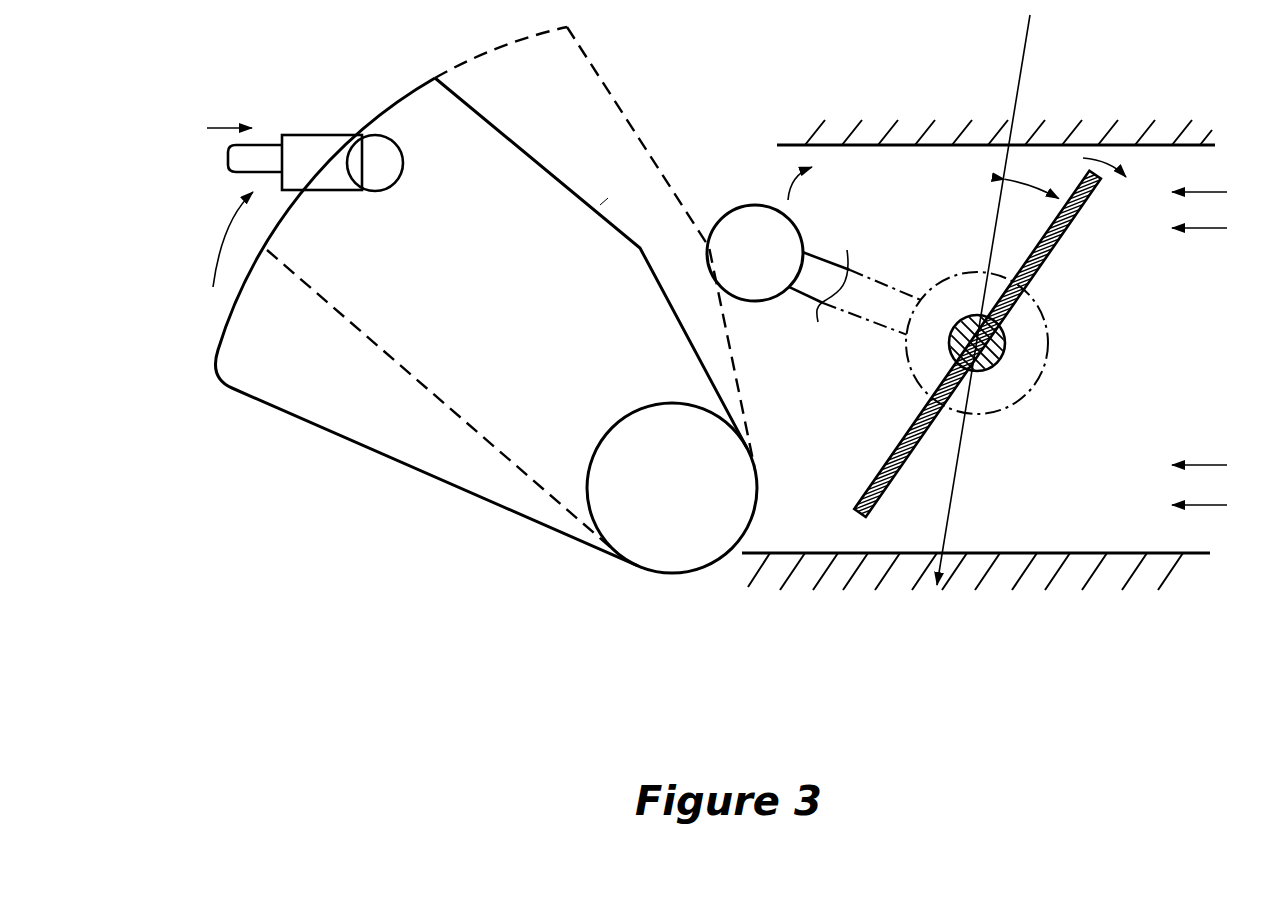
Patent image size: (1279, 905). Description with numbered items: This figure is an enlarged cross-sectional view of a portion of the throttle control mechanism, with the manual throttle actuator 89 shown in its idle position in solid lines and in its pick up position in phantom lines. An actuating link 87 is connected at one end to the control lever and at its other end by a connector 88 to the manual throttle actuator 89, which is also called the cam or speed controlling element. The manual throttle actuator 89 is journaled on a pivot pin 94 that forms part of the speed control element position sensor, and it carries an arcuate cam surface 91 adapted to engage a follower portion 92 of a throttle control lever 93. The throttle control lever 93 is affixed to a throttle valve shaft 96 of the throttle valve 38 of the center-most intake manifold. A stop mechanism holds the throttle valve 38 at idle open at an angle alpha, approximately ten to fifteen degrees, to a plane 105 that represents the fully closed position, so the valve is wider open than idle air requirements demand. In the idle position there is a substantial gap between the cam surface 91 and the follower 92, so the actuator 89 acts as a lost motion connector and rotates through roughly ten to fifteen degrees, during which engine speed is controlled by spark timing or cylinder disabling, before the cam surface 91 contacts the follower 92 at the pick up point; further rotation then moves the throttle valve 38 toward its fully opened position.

The actuating link 87 is at (272, 145).
The connector 88 is at (390, 190).
The manual throttle actuator 89 is at (366, 343).
The arcuate cam surface 91 is at (593, 213).
The follower portion 92 is at (735, 203).
The throttle control lever 93 is at (823, 267).
The pivot pin 94 is at (675, 558).
The throttle valve shaft 96 is at (1000, 363).
The throttle valve 38 is at (880, 505).
The plane 105 is at (1025, 83).